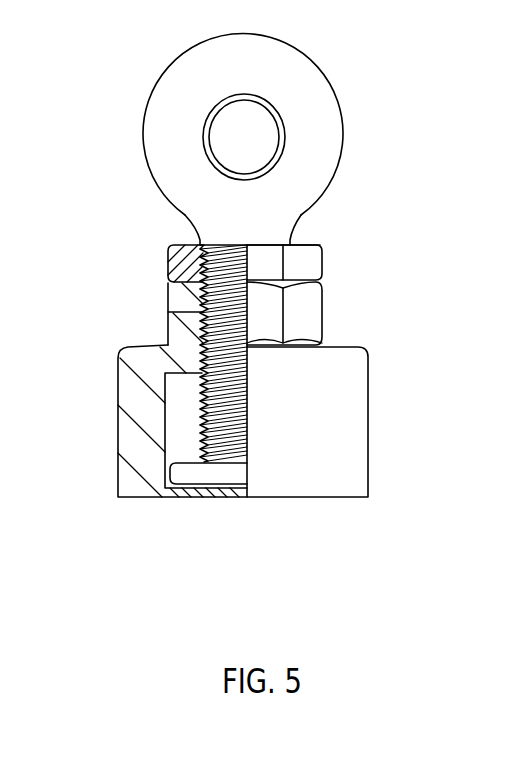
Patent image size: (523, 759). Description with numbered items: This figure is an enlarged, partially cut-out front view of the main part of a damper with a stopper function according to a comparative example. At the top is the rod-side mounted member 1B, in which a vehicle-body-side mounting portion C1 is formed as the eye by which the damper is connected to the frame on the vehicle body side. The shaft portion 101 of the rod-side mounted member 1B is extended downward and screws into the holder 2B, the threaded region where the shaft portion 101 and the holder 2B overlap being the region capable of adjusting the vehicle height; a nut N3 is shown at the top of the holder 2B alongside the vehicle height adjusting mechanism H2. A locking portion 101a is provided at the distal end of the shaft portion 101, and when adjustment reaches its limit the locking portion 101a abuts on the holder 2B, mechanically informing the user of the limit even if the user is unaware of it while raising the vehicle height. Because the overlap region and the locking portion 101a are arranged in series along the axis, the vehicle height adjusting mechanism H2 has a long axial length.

The rod-side mounted member 1B is at (143, 130).
The vehicle-body-side mounting portion C1 is at (283, 127).
The nut N3 is at (168, 257).
The shaft portion 101 is at (200, 312).
The locking portion 101a is at (192, 477).
The vehicle height adjusting mechanism H2 is at (347, 285).
The holder 2B is at (347, 450).